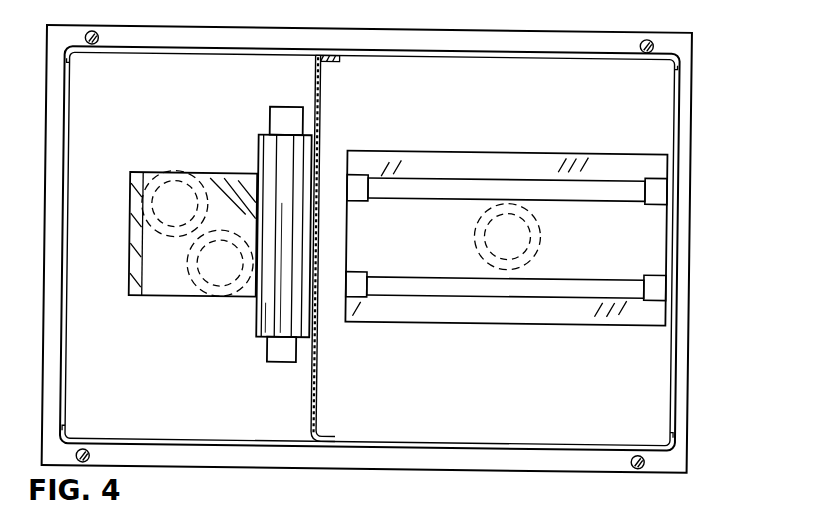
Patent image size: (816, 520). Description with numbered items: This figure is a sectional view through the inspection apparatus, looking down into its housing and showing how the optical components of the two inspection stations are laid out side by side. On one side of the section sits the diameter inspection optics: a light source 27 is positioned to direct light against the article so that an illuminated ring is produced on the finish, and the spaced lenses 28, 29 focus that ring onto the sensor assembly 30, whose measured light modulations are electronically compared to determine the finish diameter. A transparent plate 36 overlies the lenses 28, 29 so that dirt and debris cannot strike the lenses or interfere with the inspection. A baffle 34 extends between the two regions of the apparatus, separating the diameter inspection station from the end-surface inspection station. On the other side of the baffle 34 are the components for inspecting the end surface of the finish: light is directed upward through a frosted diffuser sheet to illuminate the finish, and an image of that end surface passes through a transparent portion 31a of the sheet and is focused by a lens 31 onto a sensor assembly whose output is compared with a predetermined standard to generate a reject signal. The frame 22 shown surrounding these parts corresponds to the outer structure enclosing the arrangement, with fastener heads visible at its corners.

The housing frame 22 is at (679, 104).
The light source 27 is at (281, 315).
The lens 28 is at (177, 170).
The lens 29 is at (222, 295).
The sensor assembly 30 is at (536, 316).
The lens 31 is at (530, 219).
The transparent portion 31a is at (533, 260).
The baffle 34 is at (320, 395).
The transparent plate 36 is at (227, 181).